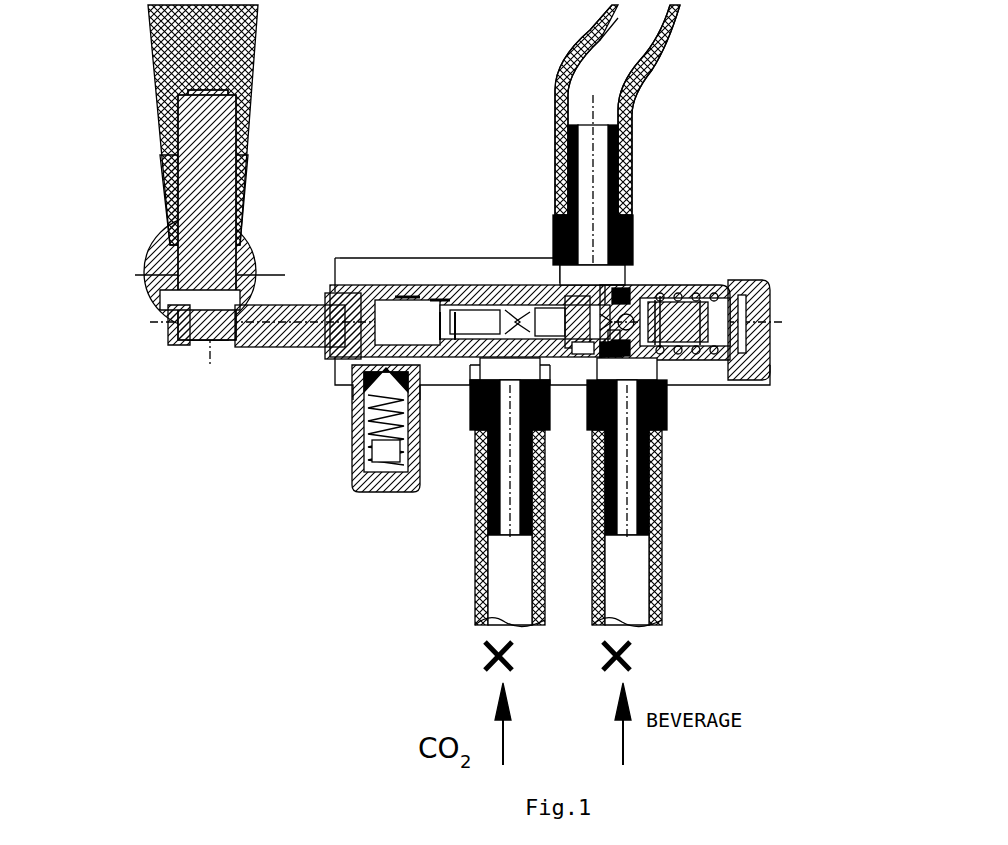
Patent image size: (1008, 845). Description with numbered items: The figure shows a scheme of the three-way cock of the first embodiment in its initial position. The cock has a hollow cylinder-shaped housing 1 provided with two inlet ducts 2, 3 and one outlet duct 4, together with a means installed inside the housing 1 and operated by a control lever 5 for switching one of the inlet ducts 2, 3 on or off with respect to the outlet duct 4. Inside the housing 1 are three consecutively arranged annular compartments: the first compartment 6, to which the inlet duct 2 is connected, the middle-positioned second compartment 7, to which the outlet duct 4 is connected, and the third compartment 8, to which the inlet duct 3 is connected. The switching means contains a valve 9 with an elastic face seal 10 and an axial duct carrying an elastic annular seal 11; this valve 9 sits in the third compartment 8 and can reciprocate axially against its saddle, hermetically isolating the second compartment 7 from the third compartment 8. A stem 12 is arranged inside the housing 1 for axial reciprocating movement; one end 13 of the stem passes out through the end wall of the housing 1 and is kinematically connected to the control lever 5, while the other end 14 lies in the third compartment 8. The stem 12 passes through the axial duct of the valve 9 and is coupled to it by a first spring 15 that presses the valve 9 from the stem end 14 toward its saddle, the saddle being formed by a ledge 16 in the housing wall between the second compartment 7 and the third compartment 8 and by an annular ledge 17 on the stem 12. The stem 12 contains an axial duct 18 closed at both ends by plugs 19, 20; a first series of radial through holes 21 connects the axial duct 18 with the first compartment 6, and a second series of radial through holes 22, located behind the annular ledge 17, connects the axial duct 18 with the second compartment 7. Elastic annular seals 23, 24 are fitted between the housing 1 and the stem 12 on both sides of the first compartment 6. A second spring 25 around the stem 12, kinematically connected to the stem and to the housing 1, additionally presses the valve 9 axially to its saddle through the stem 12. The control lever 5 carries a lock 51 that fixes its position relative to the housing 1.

The hollow cylinder-shaped housing 1 is at (343, 275).
The inlet duct 2 is at (478, 560).
The inlet duct 3 is at (650, 560).
The outlet duct 4 is at (622, 125).
The control lever 5 is at (152, 45).
The first compartment 6 is at (475, 305).
The second compartment 7 is at (580, 300).
The third compartment 8 is at (738, 355).
The valve 9 is at (628, 290).
The elastic face seal 10 is at (628, 305).
The elastic annular seal 11 is at (636, 372).
The stem 12 is at (478, 378).
The end of the stem 13 is at (336, 350).
The end of the stem 14 is at (748, 287).
The first spring 15 is at (692, 290).
The ledge 16 is at (610, 352).
The annular ledge 17 is at (577, 362).
The axial duct 18 is at (468, 338).
The plug 19 is at (400, 300).
The plug 20 is at (662, 355).
The first series of radial through holes 21 is at (478, 335).
The second series of radial through holes 22 is at (545, 302).
The elastic annular seal 23 is at (440, 300).
The elastic annular seal 24 is at (520, 300).
The second spring 25 is at (748, 318).
The lock 51 is at (354, 440).